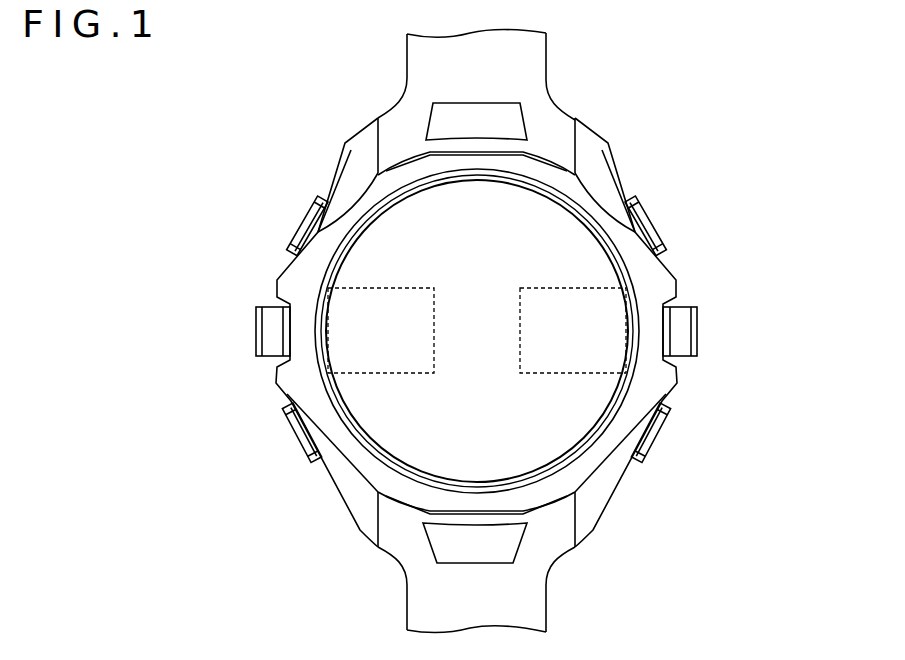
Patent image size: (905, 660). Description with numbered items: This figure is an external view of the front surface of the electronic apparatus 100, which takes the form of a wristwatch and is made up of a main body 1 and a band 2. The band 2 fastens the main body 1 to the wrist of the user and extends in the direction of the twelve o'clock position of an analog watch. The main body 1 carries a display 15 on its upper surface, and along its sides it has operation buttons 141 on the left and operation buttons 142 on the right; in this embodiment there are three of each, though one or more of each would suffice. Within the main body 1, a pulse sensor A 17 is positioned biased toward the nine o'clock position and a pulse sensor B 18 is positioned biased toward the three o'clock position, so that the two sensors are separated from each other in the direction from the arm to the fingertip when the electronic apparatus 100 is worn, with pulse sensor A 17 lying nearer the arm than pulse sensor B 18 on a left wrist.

The electronic apparatus 100 is at (681, 109).
The main body 1 is at (258, 240).
The band 2 is at (410, 67).
The display 15 is at (362, 405).
The pulse sensor A 17 is at (325, 313).
The pulse sensor B 18 is at (625, 313).
The operation button 141 is at (302, 232).
The operation button 142 is at (652, 230).